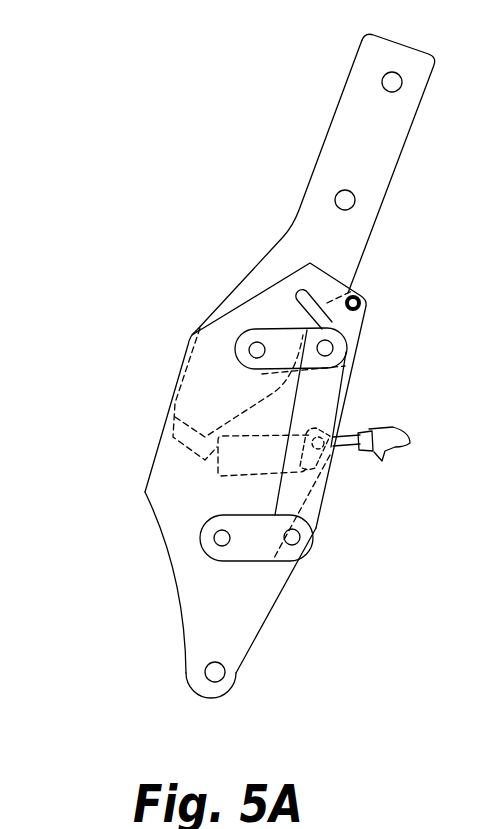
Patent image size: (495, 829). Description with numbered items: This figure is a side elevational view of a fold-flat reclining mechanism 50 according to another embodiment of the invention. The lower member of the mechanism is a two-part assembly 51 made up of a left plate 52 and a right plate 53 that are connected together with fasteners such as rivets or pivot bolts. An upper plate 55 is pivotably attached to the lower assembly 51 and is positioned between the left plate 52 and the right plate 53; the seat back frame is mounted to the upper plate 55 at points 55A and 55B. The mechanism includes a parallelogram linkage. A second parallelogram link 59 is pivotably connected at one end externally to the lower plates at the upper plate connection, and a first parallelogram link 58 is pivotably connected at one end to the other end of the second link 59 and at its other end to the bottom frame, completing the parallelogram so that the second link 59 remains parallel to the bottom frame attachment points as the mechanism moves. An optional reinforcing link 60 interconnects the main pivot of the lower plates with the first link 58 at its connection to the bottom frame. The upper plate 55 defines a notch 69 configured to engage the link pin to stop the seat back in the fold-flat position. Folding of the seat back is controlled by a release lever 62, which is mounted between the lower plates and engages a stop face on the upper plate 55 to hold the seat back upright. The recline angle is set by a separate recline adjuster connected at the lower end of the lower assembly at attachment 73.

The mechanism 50 is at (122, 299).
The two-part assembly 51 is at (122, 463).
The left plate 52 is at (160, 555).
The right plate 53 is at (243, 620).
The upper plate 55 is at (410, 138).
The mounting point 55A is at (383, 80).
The mounting point 55B is at (338, 197).
The first parallelogram link 58 is at (323, 502).
The second parallelogram link 59 is at (268, 328).
The reinforcing link 60 is at (288, 560).
The release lever 62 is at (388, 428).
The notch 69 is at (175, 402).
The attachment 73 is at (212, 673).